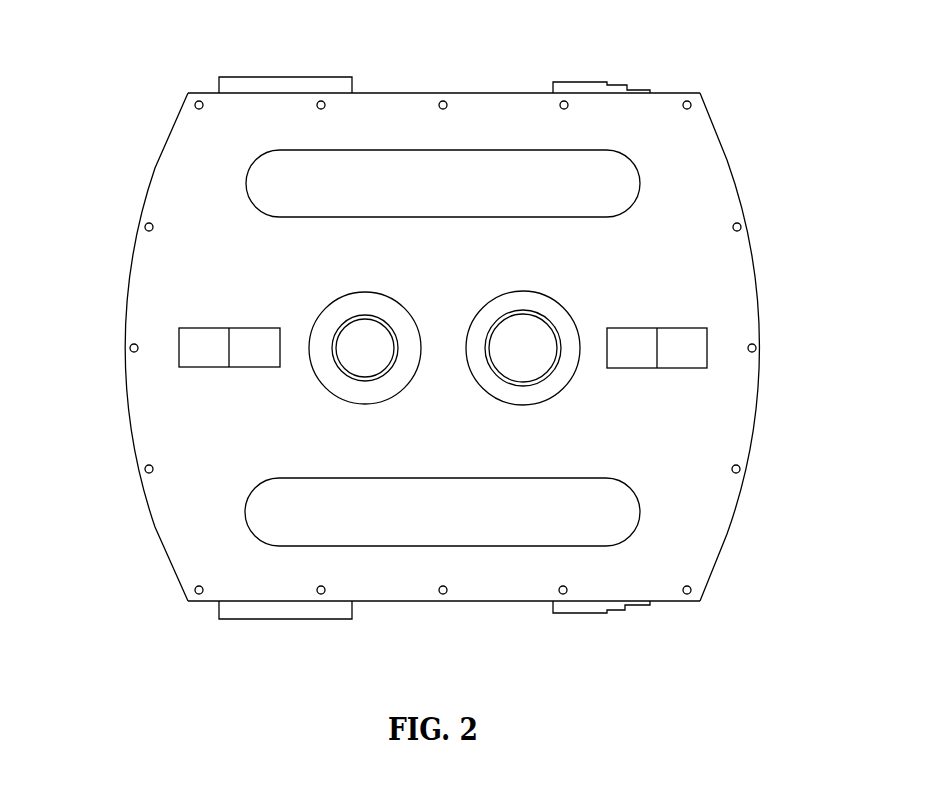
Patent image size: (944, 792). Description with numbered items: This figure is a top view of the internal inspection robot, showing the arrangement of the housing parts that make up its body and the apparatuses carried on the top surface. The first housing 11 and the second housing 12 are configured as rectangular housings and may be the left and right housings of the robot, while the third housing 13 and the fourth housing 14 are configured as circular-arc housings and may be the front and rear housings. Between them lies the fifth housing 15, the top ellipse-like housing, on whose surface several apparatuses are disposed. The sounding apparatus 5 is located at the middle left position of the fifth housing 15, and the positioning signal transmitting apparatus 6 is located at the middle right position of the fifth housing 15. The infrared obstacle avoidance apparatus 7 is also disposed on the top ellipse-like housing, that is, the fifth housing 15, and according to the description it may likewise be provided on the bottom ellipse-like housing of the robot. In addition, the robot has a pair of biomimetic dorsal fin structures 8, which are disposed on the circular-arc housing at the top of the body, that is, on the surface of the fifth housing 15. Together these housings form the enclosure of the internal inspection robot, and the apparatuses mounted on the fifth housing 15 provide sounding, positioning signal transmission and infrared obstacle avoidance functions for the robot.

The sounding apparatus 5 is at (352, 343).
The positioning signal transmitting apparatus 6 is at (528, 345).
The infrared obstacle avoidance apparatus 7 is at (198, 350).
The biomimetic dorsal fin structures 8 is at (637, 207).
The first housing 11 is at (423, 94).
The second housing 12 is at (435, 602).
The third housing 13 is at (155, 168).
The fourth housing 14 is at (727, 160).
The fifth housing 15 is at (187, 448).